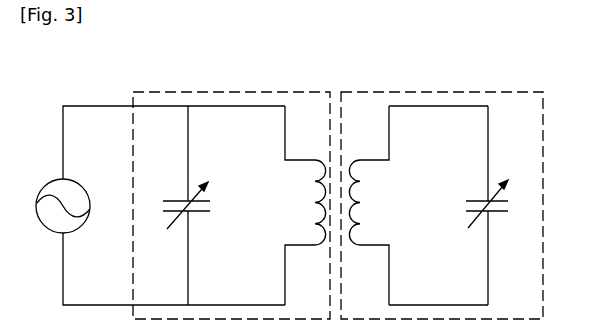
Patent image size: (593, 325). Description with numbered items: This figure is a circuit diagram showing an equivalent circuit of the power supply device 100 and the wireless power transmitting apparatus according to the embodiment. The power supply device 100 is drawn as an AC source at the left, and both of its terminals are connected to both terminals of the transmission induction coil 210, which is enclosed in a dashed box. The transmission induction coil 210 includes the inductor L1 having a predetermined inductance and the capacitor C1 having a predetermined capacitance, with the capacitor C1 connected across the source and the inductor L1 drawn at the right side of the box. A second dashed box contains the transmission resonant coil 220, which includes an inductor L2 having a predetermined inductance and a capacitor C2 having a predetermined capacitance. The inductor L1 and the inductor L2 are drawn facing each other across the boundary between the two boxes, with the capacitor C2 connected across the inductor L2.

The power supply device 100 is at (46, 182).
The transmission induction coil 210 is at (257, 92).
The transmission resonant coil 220 is at (393, 92).
The capacitor C1 is at (176, 205).
The inductor L1 is at (305, 205).
The inductor L2 is at (369, 205).
The capacitor C2 is at (500, 205).